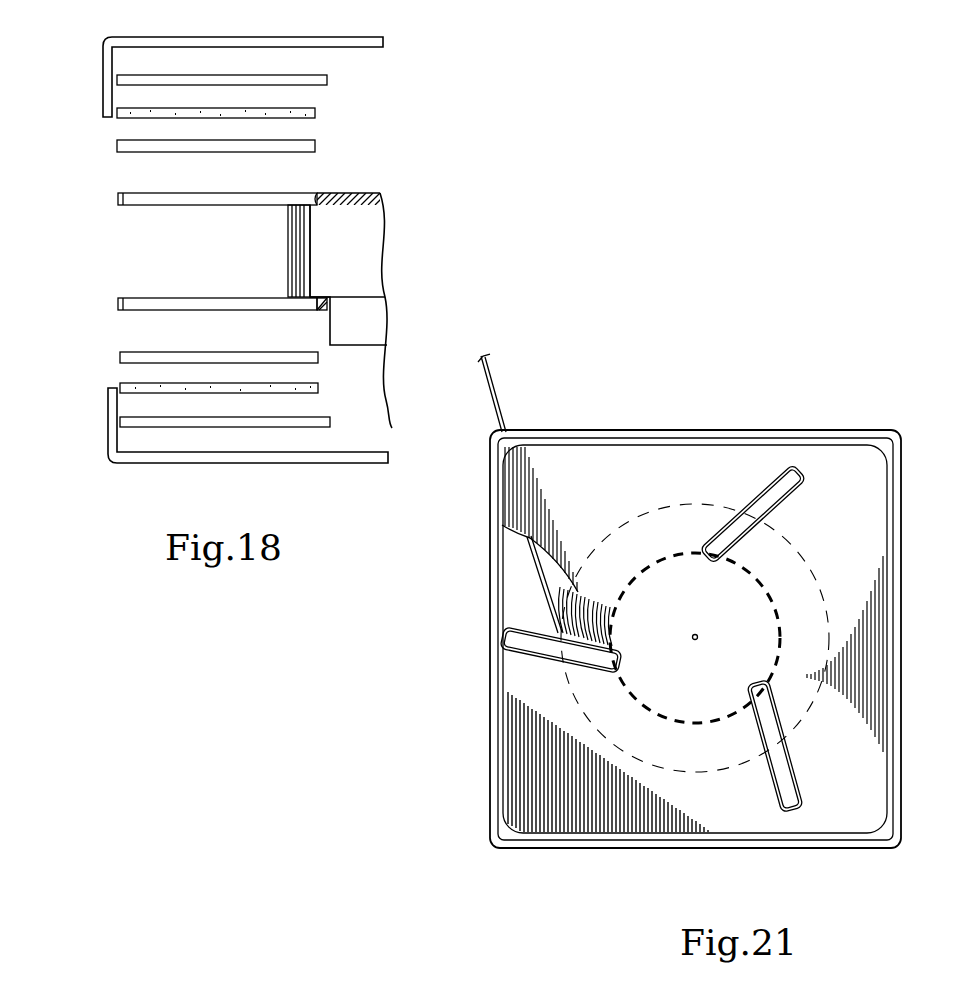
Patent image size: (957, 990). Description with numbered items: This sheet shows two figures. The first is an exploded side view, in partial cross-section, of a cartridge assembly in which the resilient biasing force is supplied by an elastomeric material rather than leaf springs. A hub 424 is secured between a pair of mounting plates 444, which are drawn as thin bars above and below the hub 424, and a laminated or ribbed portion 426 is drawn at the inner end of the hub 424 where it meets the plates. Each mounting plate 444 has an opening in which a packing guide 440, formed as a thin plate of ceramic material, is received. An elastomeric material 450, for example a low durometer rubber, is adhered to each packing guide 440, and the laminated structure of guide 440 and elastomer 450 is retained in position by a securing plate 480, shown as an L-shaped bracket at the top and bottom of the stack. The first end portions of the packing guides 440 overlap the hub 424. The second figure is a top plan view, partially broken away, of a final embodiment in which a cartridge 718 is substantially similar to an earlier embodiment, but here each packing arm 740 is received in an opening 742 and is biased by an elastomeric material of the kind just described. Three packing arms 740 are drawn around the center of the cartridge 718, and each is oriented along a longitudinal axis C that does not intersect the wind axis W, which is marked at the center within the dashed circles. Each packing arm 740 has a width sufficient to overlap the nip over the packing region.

In FIG. 18, the securing plate 480 is at (282, 80).
In FIG. 18, the elastomeric material 450 is at (295, 115).
In FIG. 18, the packing guide 440 is at (215, 143).
In FIG. 18, the mounting plate 444 is at (118, 200).
In FIG. 18, the bellows / corrugated section 426 is at (288, 242).
In FIG. 18, the hub 424 is at (360, 263).
In FIG. 21, the cartridge 718 is at (465, 795).
In FIG. 21, the packing arm 740 is at (752, 500).
In FIG. 21, the opening 742 is at (790, 512).